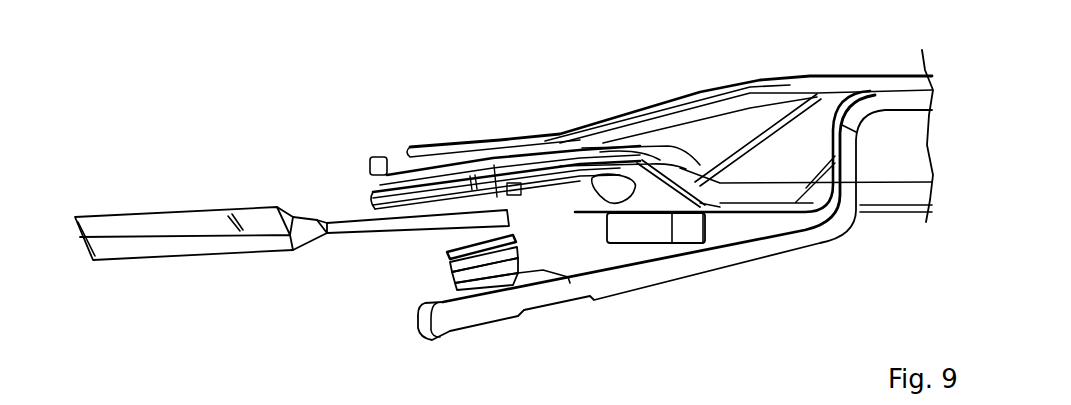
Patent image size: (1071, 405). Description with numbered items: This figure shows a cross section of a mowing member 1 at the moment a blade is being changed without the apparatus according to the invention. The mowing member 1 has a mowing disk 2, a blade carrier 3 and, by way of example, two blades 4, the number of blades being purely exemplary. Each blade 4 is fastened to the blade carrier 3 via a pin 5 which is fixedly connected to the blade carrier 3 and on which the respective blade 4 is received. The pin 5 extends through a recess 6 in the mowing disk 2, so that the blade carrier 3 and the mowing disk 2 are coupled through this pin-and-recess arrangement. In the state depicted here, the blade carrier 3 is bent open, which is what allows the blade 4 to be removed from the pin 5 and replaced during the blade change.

The mowing member 1 is at (878, 8).
The mowing disk 2 is at (731, 106).
The blade carrier 3 is at (675, 262).
The blade 4 is at (200, 225).
The pin 5 is at (447, 258).
The recess 6 is at (470, 137).